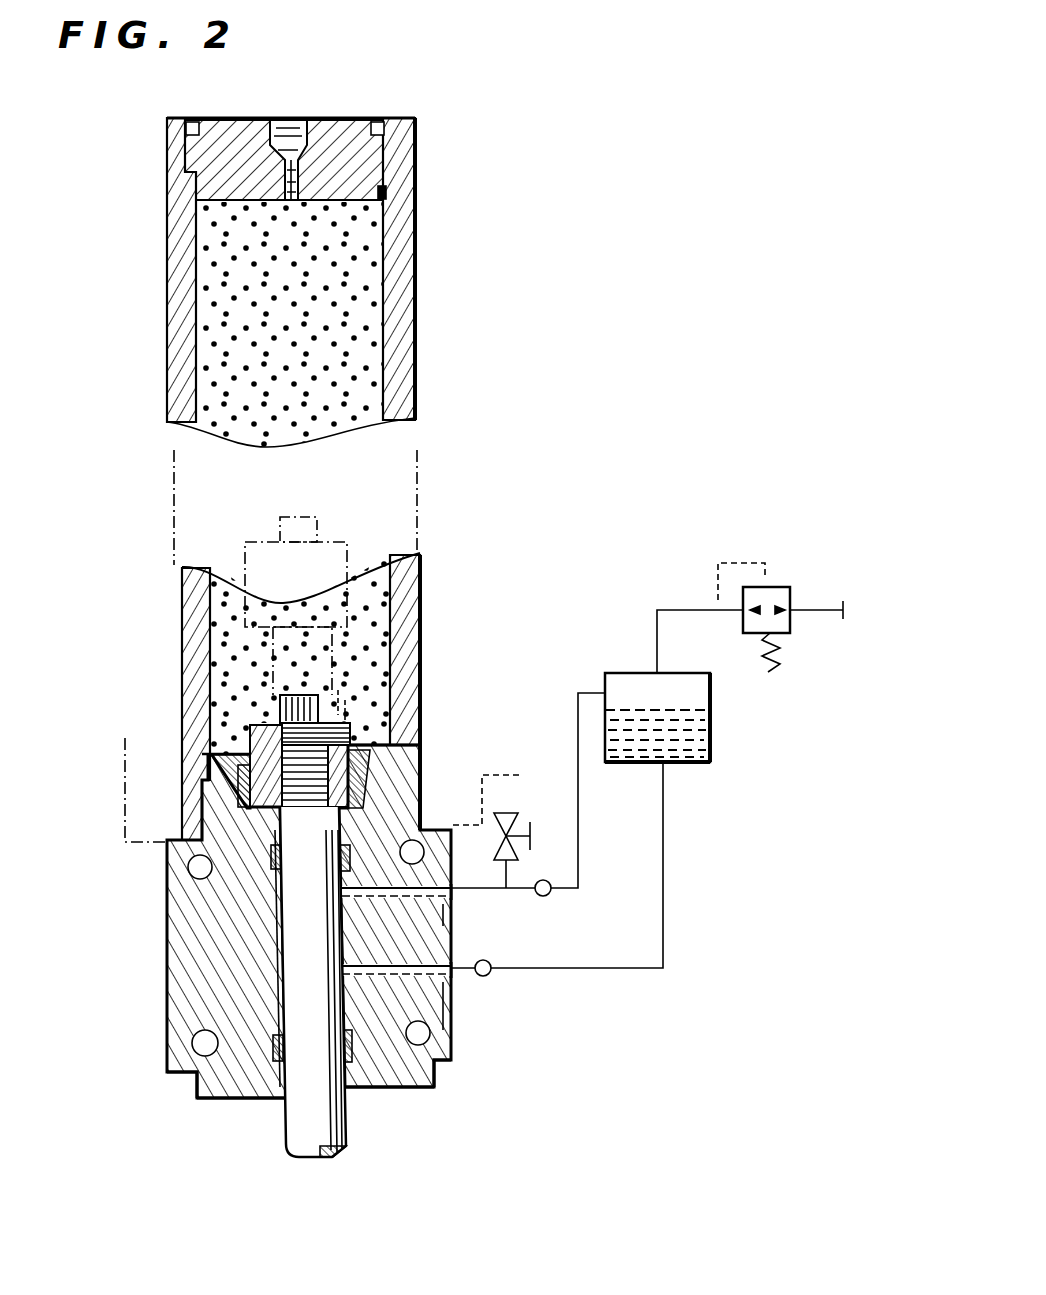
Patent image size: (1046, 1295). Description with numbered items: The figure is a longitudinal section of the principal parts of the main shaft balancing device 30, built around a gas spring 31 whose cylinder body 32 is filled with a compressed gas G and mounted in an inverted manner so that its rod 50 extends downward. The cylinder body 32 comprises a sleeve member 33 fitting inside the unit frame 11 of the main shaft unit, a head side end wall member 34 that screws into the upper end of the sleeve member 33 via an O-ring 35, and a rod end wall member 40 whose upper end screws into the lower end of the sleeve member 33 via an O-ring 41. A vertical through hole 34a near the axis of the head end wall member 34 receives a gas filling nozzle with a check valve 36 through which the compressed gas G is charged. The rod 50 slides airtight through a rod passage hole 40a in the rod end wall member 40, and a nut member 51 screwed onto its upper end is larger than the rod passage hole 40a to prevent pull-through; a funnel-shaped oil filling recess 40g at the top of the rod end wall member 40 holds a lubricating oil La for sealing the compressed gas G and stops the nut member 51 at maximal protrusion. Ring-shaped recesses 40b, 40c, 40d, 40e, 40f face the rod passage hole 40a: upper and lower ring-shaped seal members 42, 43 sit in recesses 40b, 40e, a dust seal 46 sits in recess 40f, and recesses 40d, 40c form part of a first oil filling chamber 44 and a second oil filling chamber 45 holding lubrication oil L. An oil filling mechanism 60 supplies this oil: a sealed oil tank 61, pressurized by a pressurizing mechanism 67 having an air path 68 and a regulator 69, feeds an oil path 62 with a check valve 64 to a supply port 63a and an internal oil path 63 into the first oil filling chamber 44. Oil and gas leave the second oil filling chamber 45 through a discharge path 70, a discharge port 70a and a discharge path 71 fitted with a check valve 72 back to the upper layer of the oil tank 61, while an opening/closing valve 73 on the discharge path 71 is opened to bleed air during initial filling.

The unit frame 11 is at (124, 788).
The main shaft balancing device 30 is at (368, 462).
The gas spring 31 is at (130, 598).
The cylinder body 32 is at (172, 698).
The sleeve member 33 is at (419, 658).
The head side end wall member 34 is at (368, 149).
The vertical through hole 34a is at (298, 202).
The O-ring 35 is at (384, 197).
The check valve 36 is at (268, 122).
The rod end wall member 40 is at (319, 926).
The rod passage hole 40a is at (274, 939).
The ring-shaped recess 40b is at (398, 795).
The ring-shaped recess 40c is at (345, 855).
The ring-shaped recess 40d is at (347, 934).
The ring-shaped recess 40e is at (435, 1080).
The ring-shaped recess 40f is at (362, 1097).
The oil filling recess 40g is at (402, 745).
The O-ring 41 is at (210, 755).
The ring-shaped seal member 42 is at (205, 822).
The ring-shaped seal member 43 is at (213, 1101).
The first oil filling chamber 44 is at (272, 982).
The second oil filling chamber 45 is at (274, 892).
The dust seal 46 is at (258, 1101).
The rod 50 is at (338, 690).
The nut member 51 is at (334, 532).
The oil filling mechanism 60 is at (678, 801).
The oil tank 61 is at (708, 720).
The oil path 62 is at (612, 969).
The oil path 63 is at (460, 1030).
The supply port 63a is at (460, 978).
The check valve 64 is at (493, 975).
The pressurizing mechanism 67 is at (818, 558).
The air path 68 is at (682, 610).
The regulator 69 is at (765, 586).
The discharge path 70 is at (457, 926).
The discharge port 70a is at (457, 897).
The discharge path 71 is at (580, 872).
The check valve 72 is at (546, 898).
The opening/closing valve 73 is at (510, 812).
The compressed gas G is at (390, 576).
The lubrication oil L is at (694, 765).
The lubricating oil La is at (357, 700).